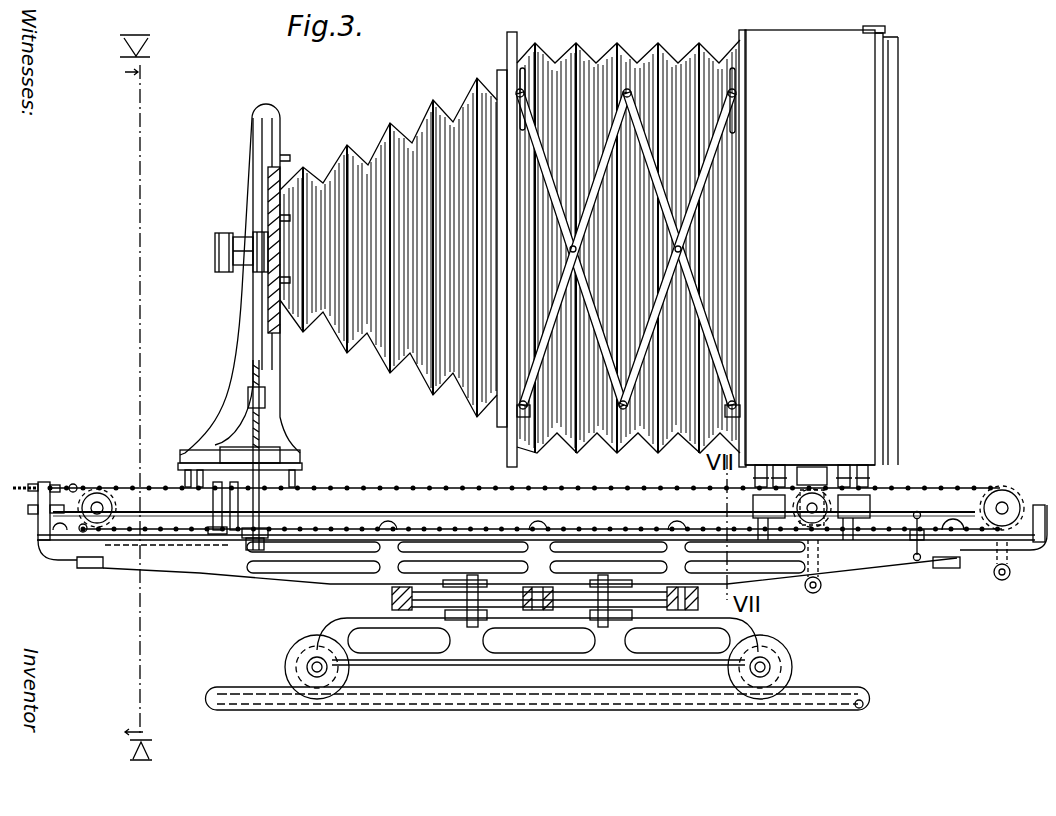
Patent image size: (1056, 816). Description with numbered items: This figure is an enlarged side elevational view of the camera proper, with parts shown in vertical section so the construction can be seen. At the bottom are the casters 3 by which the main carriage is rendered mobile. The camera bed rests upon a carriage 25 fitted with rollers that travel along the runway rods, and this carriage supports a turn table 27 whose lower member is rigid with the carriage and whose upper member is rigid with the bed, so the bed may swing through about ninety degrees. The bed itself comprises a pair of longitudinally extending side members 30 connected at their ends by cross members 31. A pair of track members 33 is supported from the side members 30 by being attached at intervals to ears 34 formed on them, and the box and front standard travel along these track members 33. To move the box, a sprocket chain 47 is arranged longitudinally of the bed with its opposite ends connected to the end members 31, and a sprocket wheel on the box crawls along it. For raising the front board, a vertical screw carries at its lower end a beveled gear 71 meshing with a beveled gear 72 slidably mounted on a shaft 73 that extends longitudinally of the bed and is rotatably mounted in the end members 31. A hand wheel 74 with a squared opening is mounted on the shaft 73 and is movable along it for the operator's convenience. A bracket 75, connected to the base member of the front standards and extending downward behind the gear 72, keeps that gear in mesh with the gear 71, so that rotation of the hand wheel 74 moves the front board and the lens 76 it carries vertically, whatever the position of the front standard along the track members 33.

The casters 3 is at (547, 708).
The carriage 25 is at (750, 628).
The turn table 27 is at (537, 617).
The side members 30 is at (180, 567).
The cross members 31 is at (47, 552).
The track members 33 is at (897, 520).
The ears 34 is at (385, 543).
The sprocket chain 47 is at (615, 487).
The beveled gear 71 is at (258, 537).
The beveled gear 72 is at (248, 547).
The shaft 73 is at (120, 537).
The hand wheel 74 is at (922, 563).
The bracket 75 is at (228, 543).
The lens 76 is at (240, 240).